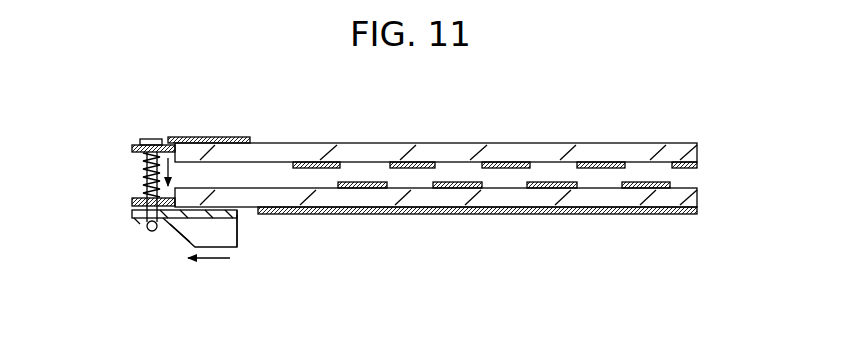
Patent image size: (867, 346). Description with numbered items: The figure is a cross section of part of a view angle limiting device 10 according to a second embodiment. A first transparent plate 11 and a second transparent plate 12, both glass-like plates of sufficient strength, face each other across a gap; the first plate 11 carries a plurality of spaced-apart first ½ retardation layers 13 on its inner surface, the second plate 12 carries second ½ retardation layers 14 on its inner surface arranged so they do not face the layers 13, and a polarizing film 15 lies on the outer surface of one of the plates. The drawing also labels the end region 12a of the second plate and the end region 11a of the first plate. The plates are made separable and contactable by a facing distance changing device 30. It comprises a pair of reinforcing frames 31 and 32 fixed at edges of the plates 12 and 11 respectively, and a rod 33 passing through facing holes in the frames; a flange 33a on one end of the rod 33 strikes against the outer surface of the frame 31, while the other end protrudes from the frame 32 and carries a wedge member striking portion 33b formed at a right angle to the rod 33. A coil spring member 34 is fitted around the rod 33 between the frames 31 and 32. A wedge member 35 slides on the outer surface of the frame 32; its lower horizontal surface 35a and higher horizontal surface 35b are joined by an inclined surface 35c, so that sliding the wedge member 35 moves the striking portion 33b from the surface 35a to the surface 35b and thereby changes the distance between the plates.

The view angle limiting device 10 is at (694, 138).
The first transparent plate 11 is at (463, 193).
The surface of lower circuit board 11a is at (697, 196).
The second transparent plate 12 is at (459, 142).
The surface of upper circuit board 12a is at (697, 152).
The first ½ retardation layers 13 is at (372, 188).
The second ½ retardation layers 14 is at (338, 160).
The polarizing film 15 is at (645, 214).
The facing distance changing device 30 is at (128, 216).
The reinforcing frame 31 is at (140, 146).
The reinforcing frame 32 is at (132, 203).
The rod 33 is at (142, 187).
The flange 33a is at (151, 140).
The wedge member striking portion 33b is at (152, 232).
The spring member 34 is at (142, 162).
The wedge member 35 is at (241, 230).
The lower horizontal surface 35a is at (138, 222).
The higher horizontal surface 35b is at (238, 250).
The inclined surface 35c is at (186, 240).